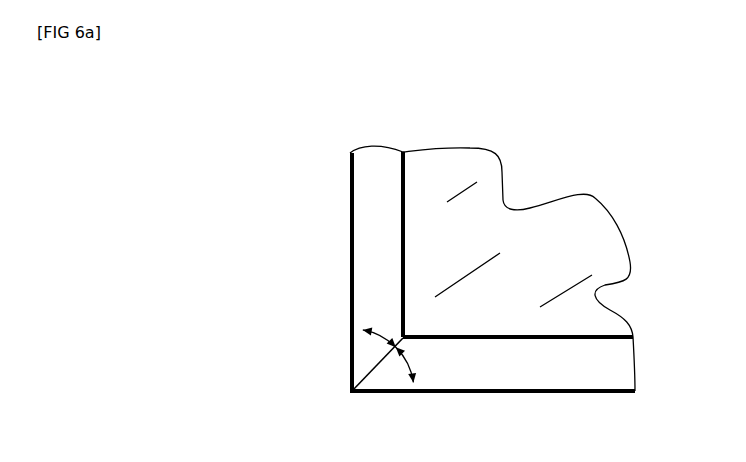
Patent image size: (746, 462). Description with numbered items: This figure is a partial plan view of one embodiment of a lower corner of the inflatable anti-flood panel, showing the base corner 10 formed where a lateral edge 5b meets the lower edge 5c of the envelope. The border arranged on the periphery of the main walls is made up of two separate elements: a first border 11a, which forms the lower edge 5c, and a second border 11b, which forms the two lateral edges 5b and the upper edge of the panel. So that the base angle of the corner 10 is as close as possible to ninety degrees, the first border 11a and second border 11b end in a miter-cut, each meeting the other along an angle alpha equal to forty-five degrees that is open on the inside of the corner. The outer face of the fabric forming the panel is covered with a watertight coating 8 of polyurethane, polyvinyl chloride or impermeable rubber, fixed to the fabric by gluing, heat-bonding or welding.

The watertight coating 8 is at (438, 160).
The lateral edge 5b is at (350, 295).
The lower edge 5c is at (493, 392).
The first border 11a is at (582, 372).
The second border 11b is at (368, 257).
The corner 10 is at (352, 391).